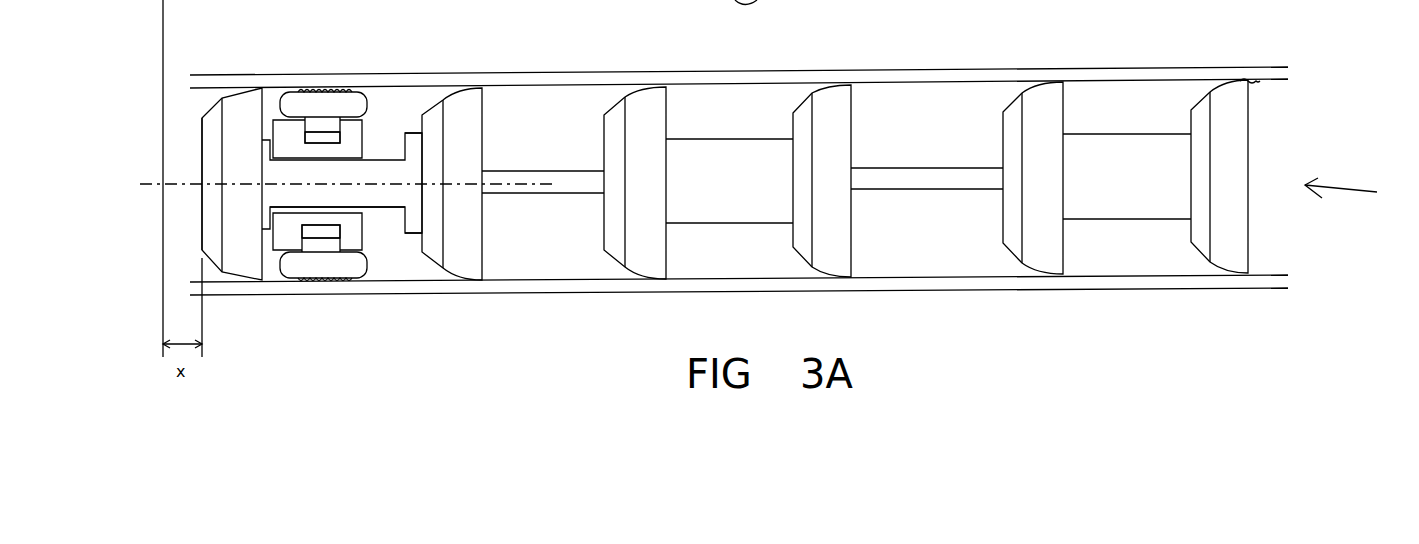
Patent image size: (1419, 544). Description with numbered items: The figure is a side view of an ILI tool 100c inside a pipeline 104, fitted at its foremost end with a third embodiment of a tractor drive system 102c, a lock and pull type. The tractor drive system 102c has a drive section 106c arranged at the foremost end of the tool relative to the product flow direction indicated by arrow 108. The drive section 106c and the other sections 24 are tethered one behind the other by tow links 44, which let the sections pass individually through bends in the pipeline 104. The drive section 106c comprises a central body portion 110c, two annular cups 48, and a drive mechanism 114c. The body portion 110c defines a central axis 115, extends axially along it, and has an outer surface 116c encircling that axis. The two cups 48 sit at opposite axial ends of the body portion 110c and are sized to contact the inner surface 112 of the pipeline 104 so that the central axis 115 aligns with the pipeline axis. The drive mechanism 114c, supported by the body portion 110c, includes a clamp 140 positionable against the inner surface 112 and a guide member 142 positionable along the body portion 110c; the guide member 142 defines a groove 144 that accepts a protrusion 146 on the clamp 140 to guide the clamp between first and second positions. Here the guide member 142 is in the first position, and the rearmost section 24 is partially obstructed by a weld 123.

The ILI tool 100c is at (180, 125).
The tractor drive system 102c is at (192, 233).
The pipeline 104 is at (1187, 288).
The drive section 106c is at (200, 215).
The arrow 108 is at (1354, 172).
The central body portion 110c is at (398, 210).
The inner surface 112 is at (957, 83).
The drive mechanism 114c is at (397, 118).
The central axis 115 is at (150, 183).
The outer surface 116c is at (372, 196).
The weld 123 is at (1258, 82).
The clamp 140 is at (375, 130).
The guide member 142 is at (283, 115).
The groove 144 is at (325, 240).
The protrusion 146 is at (313, 135).
The sections 24 is at (740, 108).
The tow links 44 is at (542, 195).
The cups 48 is at (213, 265).